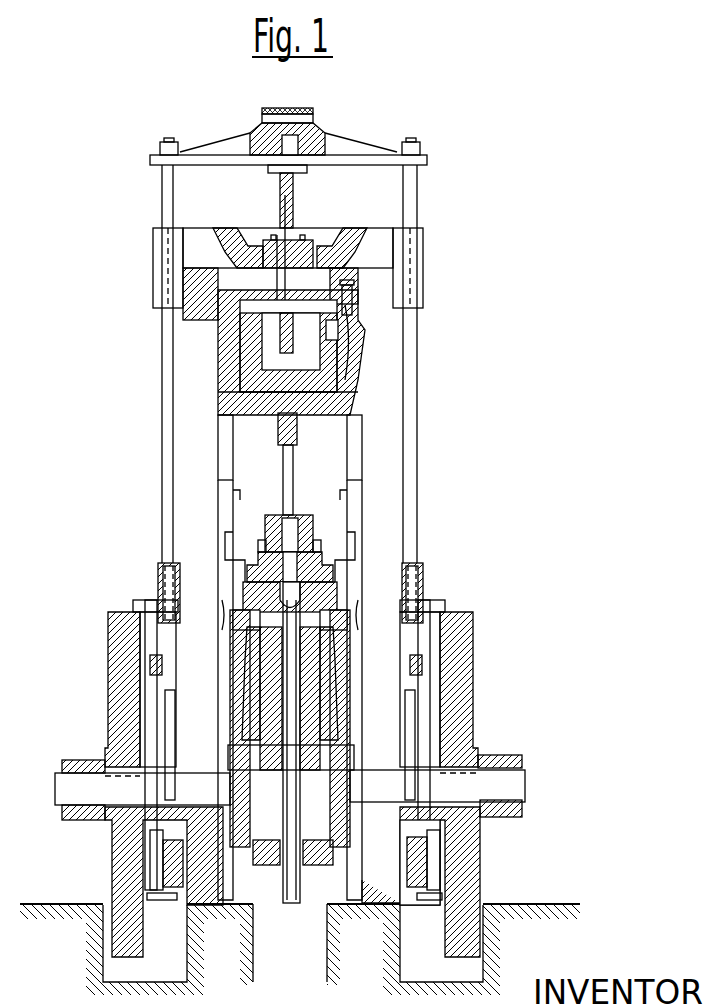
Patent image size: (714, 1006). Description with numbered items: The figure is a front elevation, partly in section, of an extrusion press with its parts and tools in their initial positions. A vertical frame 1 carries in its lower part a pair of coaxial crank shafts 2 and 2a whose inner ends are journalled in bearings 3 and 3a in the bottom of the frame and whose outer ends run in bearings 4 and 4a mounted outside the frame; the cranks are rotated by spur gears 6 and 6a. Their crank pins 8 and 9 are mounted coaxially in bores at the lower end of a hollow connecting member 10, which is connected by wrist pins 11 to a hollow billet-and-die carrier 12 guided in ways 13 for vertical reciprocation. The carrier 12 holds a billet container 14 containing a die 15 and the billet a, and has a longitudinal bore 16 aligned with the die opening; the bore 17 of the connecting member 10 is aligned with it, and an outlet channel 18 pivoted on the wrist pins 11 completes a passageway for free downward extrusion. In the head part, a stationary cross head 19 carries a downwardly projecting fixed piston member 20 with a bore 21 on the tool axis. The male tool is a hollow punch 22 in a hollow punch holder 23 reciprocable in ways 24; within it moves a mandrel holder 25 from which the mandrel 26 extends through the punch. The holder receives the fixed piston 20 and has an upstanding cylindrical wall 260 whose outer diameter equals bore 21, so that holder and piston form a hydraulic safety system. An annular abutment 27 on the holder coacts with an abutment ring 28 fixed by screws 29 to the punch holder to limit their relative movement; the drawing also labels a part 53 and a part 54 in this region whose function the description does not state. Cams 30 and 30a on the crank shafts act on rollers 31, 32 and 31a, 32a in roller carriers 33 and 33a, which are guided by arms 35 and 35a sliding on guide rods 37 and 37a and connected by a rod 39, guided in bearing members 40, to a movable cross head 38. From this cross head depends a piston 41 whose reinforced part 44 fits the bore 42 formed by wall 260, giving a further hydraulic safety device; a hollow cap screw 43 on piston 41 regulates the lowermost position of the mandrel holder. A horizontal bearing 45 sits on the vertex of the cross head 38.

The vertical frame 1 is at (392, 482).
The crank shaft 2 is at (66, 792).
The crank shaft 2a is at (520, 791).
The bearing 3 is at (210, 882).
The bearing 3a is at (376, 885).
The bearing 4 is at (64, 766).
The bearing 4a is at (492, 758).
The spur gear 6 is at (125, 726).
The spur gear 6a is at (462, 722).
The crank pin 8 is at (268, 845).
The crank pin 9 is at (318, 845).
The connecting member 10 is at (312, 712).
The wrist pins 11 is at (245, 618).
The billet-and-die carrier 12 is at (250, 588).
The ways 13 is at (228, 532).
The billet container 14 is at (307, 515).
The die 15 is at (262, 546).
The longitudinal bore 16 is at (293, 580).
The bore 17 is at (310, 668).
The outlet channel 18 is at (292, 906).
The stationary cross head 19 is at (197, 236).
The fixed piston member 20 is at (236, 344).
The bore 21 is at (270, 240).
The hollow punch 22 is at (298, 430).
The punch holder 23 is at (222, 406).
The ways 24 is at (222, 444).
The mandrel holder 25 is at (330, 380).
The mandrel 26 is at (292, 462).
The annular abutment 27 is at (333, 343).
The abutment ring 28 is at (205, 316).
The screws 29 is at (352, 282).
The cam 30 is at (168, 697).
The cam 30a is at (412, 694).
The roller 31 is at (158, 655).
The roller 31a is at (420, 652).
The roller 32 is at (165, 870).
The roller 32a is at (420, 866).
The roller carrier 33 is at (160, 571).
The roller carrier 33a is at (424, 573).
The arm 35 is at (150, 682).
The arm 35a is at (428, 672).
The guide rod 37 is at (155, 886).
The guide rod 37a is at (432, 885).
The movable cross head 38 is at (390, 160).
The rod 39 is at (168, 479).
The bearing members 40 is at (166, 245).
The piston 41 is at (293, 182).
The bore 42 is at (325, 360).
The hollow cap screw 43 is at (302, 246).
The reinforced part 44 is at (356, 296).
The horizontal bearing 45 is at (262, 132).
The cylinder wall 53 is at (226, 374).
The pin 54 is at (283, 205).
The cylindrical wall 260 is at (332, 330).
The billet a is at (280, 515).